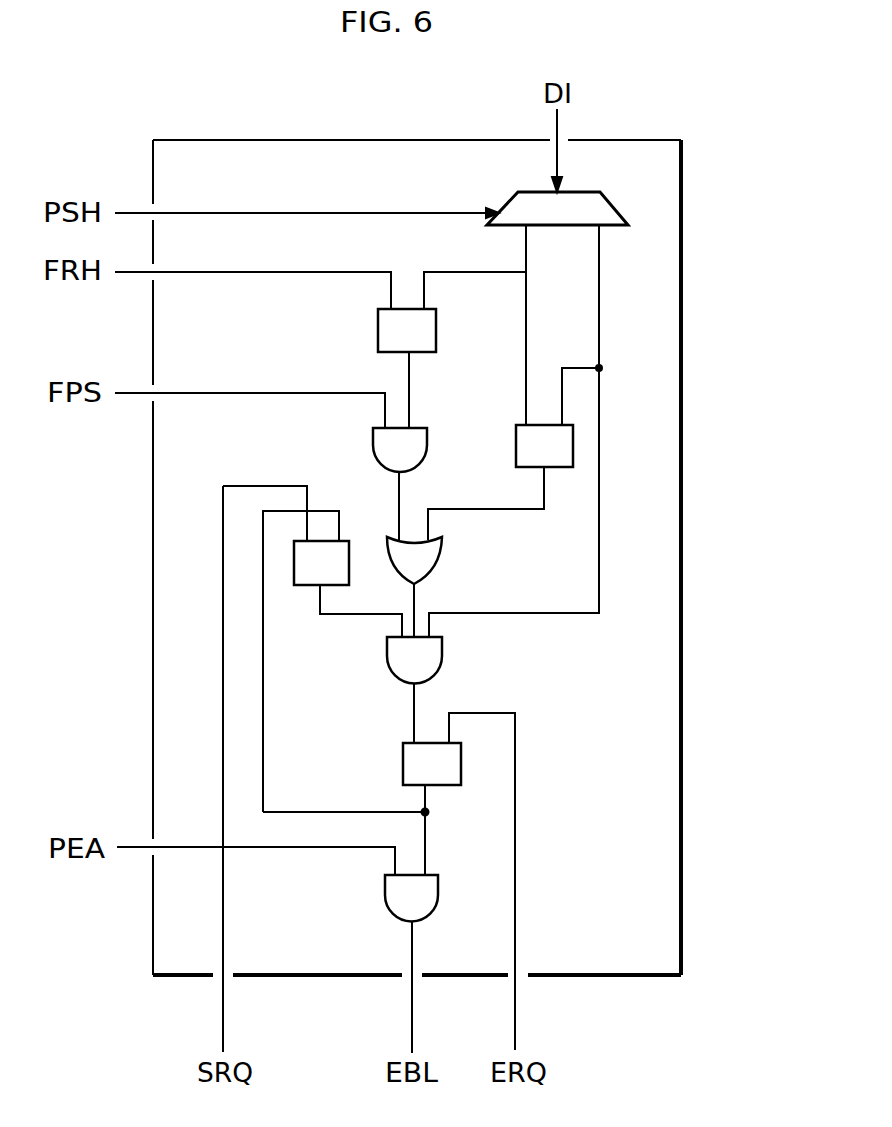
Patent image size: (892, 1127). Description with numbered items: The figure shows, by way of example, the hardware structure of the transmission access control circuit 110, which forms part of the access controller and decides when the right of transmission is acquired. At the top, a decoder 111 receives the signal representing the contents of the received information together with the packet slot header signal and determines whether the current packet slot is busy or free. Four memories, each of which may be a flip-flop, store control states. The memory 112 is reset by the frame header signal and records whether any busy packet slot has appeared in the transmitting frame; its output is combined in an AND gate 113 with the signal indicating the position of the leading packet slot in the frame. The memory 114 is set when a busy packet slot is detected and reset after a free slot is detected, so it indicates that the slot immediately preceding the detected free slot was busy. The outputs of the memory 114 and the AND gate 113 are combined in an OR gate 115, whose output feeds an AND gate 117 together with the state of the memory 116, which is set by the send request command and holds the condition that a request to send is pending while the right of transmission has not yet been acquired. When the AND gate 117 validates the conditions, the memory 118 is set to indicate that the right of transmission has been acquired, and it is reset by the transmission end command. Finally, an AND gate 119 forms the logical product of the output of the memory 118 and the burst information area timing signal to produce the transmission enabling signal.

The transmission access control circuit 110 is at (683, 925).
The decoder 111 is at (602, 197).
The memory 112 is at (378, 331).
The AND gate 113 is at (373, 443).
The memory 114 is at (516, 450).
The OR gate 115 is at (442, 553).
The memory 116 is at (300, 586).
The AND gate 117 is at (442, 648).
The memory 118 is at (403, 768).
The AND gate 119 is at (385, 896).